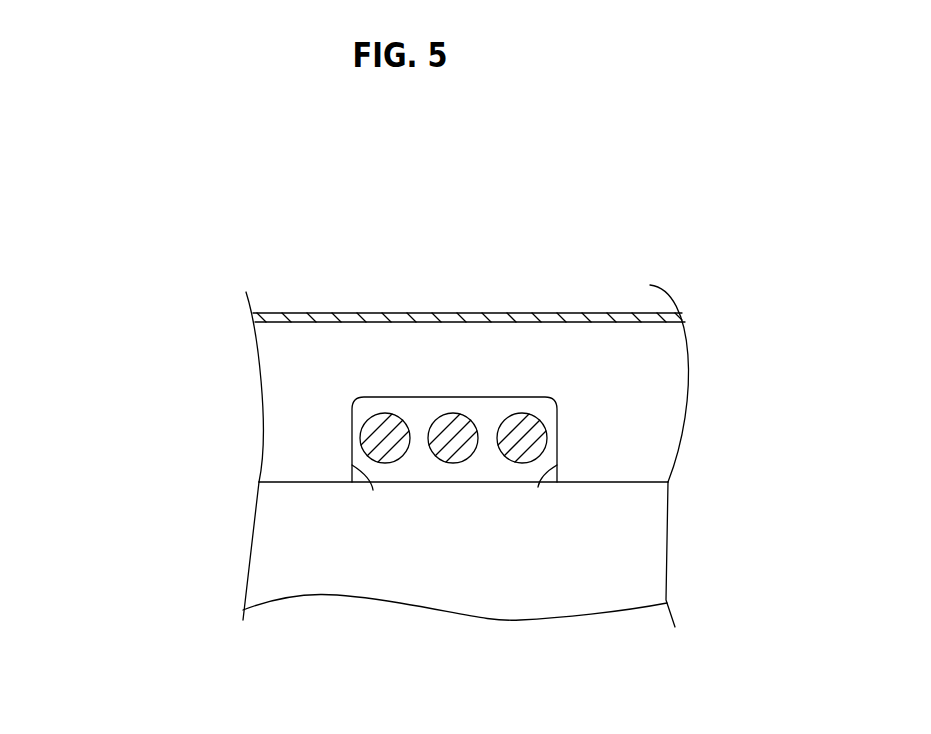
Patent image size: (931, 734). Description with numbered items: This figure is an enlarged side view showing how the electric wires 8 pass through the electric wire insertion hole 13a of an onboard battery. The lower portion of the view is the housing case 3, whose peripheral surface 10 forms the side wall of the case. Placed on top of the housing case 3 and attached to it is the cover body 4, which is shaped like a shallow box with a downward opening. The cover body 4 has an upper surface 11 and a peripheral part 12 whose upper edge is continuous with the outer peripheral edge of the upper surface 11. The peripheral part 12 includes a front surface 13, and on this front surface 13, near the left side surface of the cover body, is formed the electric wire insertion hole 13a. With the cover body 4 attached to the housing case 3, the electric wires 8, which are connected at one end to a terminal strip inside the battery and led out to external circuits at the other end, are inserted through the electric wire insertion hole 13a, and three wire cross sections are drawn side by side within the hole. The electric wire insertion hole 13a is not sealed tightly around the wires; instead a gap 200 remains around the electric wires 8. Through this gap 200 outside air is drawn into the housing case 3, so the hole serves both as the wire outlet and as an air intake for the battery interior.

The housing case 3 is at (637, 545).
The cover body 4 is at (657, 408).
The electric wires 8 is at (393, 423).
The peripheral surface 10 is at (270, 542).
The upper surface 11 is at (567, 313).
The peripheral part 12 is at (288, 388).
The front surface 13 is at (288, 448).
The electric wire insertion hole 13a is at (373, 490).
The gap 200 is at (538, 487).